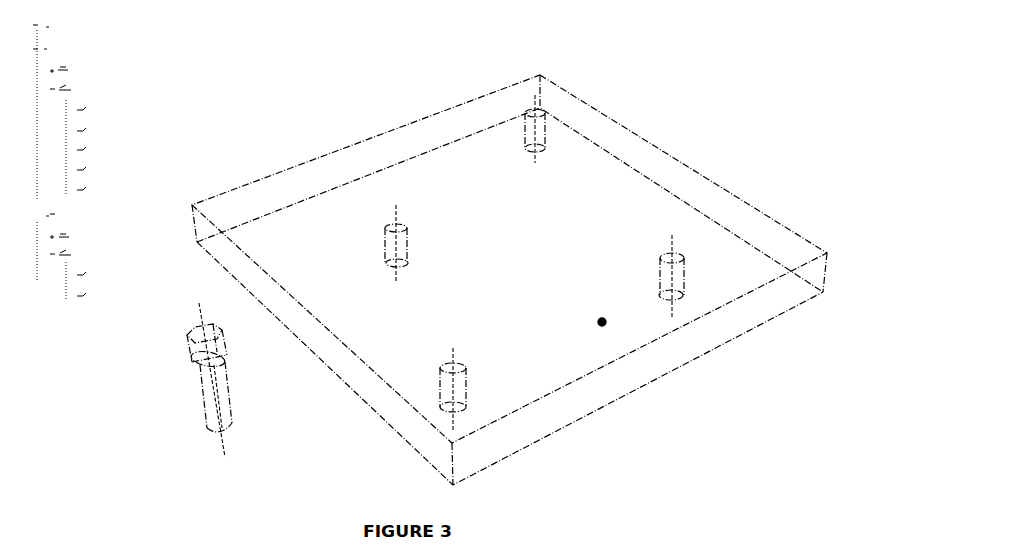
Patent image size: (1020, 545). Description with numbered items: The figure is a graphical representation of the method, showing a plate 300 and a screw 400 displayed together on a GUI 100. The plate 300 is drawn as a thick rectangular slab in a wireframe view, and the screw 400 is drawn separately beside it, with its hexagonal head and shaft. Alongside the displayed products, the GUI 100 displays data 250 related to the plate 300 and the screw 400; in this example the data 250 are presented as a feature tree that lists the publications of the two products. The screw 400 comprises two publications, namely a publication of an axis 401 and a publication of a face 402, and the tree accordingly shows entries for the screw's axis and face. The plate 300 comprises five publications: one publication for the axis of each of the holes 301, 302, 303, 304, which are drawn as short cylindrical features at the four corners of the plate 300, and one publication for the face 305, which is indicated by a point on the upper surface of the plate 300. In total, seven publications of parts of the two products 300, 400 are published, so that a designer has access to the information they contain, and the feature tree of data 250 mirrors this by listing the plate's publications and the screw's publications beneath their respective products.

The GUI 100 is at (344, 471).
The data 250 is at (180, 128).
The plate 300 is at (686, 165).
The hole 301 is at (537, 123).
The hole 302 is at (678, 287).
The hole 303 is at (458, 388).
The hole 304 is at (390, 232).
The face 305 is at (607, 322).
The screw 400 is at (205, 406).
The axis 401 is at (223, 443).
The face 402 is at (195, 361).